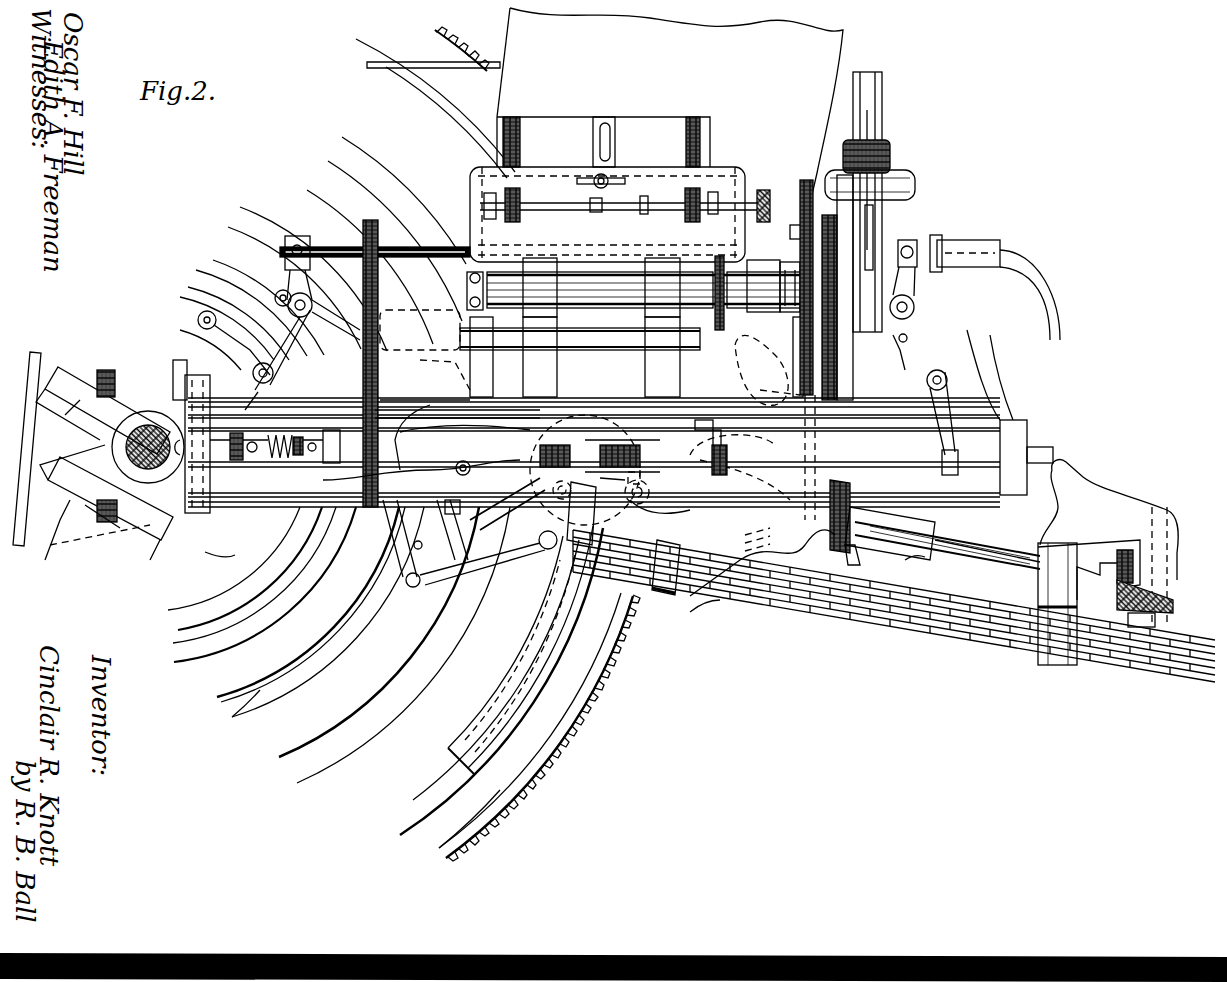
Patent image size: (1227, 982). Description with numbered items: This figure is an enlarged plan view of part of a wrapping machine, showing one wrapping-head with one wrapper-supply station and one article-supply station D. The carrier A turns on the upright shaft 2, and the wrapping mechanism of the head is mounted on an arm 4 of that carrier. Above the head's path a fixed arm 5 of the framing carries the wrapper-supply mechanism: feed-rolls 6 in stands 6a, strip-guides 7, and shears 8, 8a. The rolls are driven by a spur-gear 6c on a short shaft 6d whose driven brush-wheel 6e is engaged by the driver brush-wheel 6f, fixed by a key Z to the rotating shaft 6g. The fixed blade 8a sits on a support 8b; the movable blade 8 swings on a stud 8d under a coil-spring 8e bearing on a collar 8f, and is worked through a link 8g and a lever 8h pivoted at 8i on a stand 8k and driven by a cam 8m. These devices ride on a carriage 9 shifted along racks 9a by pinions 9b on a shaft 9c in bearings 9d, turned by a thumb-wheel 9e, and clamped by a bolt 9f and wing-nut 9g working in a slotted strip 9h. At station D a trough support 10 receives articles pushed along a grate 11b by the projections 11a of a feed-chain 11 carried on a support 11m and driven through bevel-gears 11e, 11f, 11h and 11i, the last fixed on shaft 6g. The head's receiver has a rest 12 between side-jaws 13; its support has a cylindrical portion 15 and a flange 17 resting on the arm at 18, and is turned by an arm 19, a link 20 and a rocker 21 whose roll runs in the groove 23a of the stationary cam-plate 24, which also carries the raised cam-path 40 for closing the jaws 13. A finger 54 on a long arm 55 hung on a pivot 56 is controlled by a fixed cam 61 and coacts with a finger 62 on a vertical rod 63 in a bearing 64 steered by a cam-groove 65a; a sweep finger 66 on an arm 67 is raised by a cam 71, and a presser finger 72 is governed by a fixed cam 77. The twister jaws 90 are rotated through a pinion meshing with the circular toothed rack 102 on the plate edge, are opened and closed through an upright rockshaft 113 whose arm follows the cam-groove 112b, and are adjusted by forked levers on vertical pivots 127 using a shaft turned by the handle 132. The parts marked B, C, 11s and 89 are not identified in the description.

The upright shaft 2 is at (160, 500).
The arm of the carrier 4 is at (115, 322).
The fixed arm 5 is at (848, 42).
The feed-rolls 6 is at (615, 272).
The stands 6a is at (525, 270).
The spur-gear 6c is at (718, 253).
The short shaft 6d is at (788, 262).
The driven brush-wheel 6e is at (797, 225).
The driver brush-wheel 6f is at (915, 182).
The rotating shaft 6g is at (883, 108).
The strip-guides 7 is at (636, 352).
The movable upper shear-blade 8 is at (440, 395).
The fixed shear-blade 8a is at (611, 470).
The support 8b is at (480, 385).
The stud 8d is at (742, 497).
The coil-spring 8e is at (750, 521).
The collar 8f is at (650, 495).
The link 8g is at (712, 455).
The lever 8h is at (850, 380).
The pivot of lever 8i is at (767, 370).
The supporting stand 8k is at (760, 492).
The cam 8m is at (928, 382).
The carriage 9 is at (470, 225).
The racks 9a is at (512, 118).
The pinions 9b is at (522, 197).
The shaft 9c is at (655, 214).
The bearings 9d is at (732, 150).
The thumb-wheel 9e is at (762, 190).
The clamping bolt 9f is at (607, 176).
The wing-nut 9g is at (605, 205).
The strip 9h is at (612, 125).
The support 10 is at (525, 640).
The feed-chain 11 is at (850, 528).
The projections 11a is at (1095, 676).
The rack or grate 11b is at (820, 618).
The bevel-gear 11e is at (1165, 610).
The driving bevel-gear 11f is at (1140, 572).
The second bevel-gear 11h is at (873, 560).
The bevel-gear 11i is at (882, 520).
The fixed support 11m is at (1120, 510).
The slide 11s is at (1008, 583).
The upright rockshaft 113 is at (1000, 564).
The rest 12 is at (622, 445).
The side-jaws or pressers 13 is at (555, 485).
The cylindrical portion 15 is at (500, 575).
The radially projecting flange 17 is at (642, 477).
The seat on arm 18 is at (561, 443).
The arm 19 is at (645, 510).
The link 20 is at (623, 538).
The rocker 21 is at (507, 504).
The groove 23a is at (330, 725).
The stationary cam-plate 24 is at (455, 835).
The cam-path 40 is at (415, 790).
The finger 54 is at (460, 512).
The arm 55 is at (265, 584).
The pivot 56 is at (200, 375).
The fixed cam 61 is at (258, 585).
The coacting finger 62 is at (488, 558).
The vertical rod 63 is at (412, 590).
The bearing 64 is at (412, 587).
The cam-groove 65a is at (345, 630).
The finger 66 is at (525, 398).
The arm 67 is at (351, 363).
The raised cam 71 is at (222, 705).
The presser finger 72 is at (426, 442).
The fixed cam 77 is at (255, 618).
The gear 89 is at (707, 451).
The twister jaws 90 is at (405, 340).
The circular toothed rack 102 is at (570, 748).
The cam-groove 112b is at (125, 570).
The vertical pivots 127 is at (318, 300).
The handle 132 is at (1045, 285).
The carrier A is at (112, 445).
The frame B is at (780, 431).
The housing C is at (587, 214).
The article-supply station D is at (692, 611).
The key Z is at (880, 225).